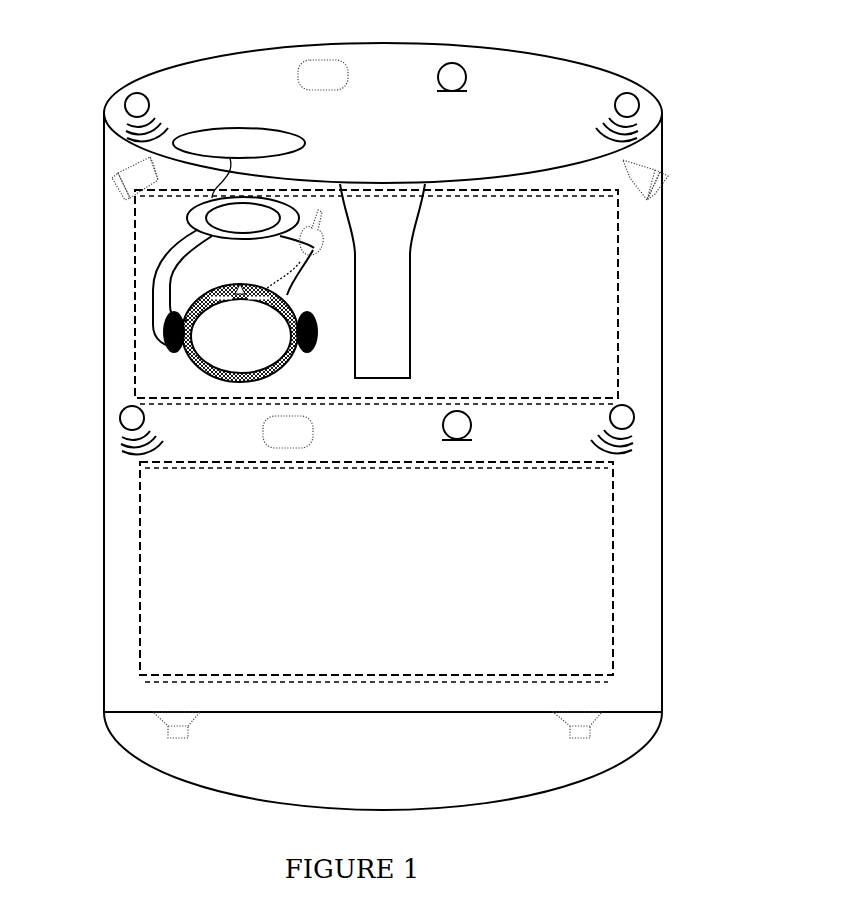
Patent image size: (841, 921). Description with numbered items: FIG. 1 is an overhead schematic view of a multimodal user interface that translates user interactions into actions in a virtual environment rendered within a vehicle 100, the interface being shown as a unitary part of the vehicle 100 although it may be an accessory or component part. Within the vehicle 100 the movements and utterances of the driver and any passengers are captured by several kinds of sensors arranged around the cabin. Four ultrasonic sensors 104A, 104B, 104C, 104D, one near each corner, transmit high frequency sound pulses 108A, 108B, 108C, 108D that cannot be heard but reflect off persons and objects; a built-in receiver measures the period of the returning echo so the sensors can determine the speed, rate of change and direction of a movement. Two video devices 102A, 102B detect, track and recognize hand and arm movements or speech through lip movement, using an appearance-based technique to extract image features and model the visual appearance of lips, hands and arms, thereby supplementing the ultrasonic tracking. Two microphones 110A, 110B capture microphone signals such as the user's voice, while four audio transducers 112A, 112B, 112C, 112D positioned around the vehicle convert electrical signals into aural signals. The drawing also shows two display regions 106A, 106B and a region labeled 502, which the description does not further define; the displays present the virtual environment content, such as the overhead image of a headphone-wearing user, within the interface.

The vehicle 100 is at (191, 29).
The video device 102A is at (323, 90).
The video device 102B is at (267, 432).
The ultrasonic sensor 104A is at (131, 92).
The ultrasonic sensor 104B is at (631, 92).
The ultrasonic sensor 104C is at (130, 407).
The ultrasonic sensor 104D is at (625, 405).
The display 106A is at (133, 272).
The display 106B is at (135, 517).
The high frequency sound pulse 108A is at (118, 118).
The high frequency sound pulse 108B is at (598, 120).
The high frequency sound pulse 108C is at (125, 438).
The high frequency sound pulse 108D is at (594, 433).
The microphone 110A is at (452, 92).
The microphone 110B is at (448, 438).
The audio transducer 112A is at (112, 165).
The audio transducer 112B is at (660, 172).
The audio transducer 112C is at (160, 725).
The audio transducer 112D is at (598, 714).
The user 502 is at (775, 436).